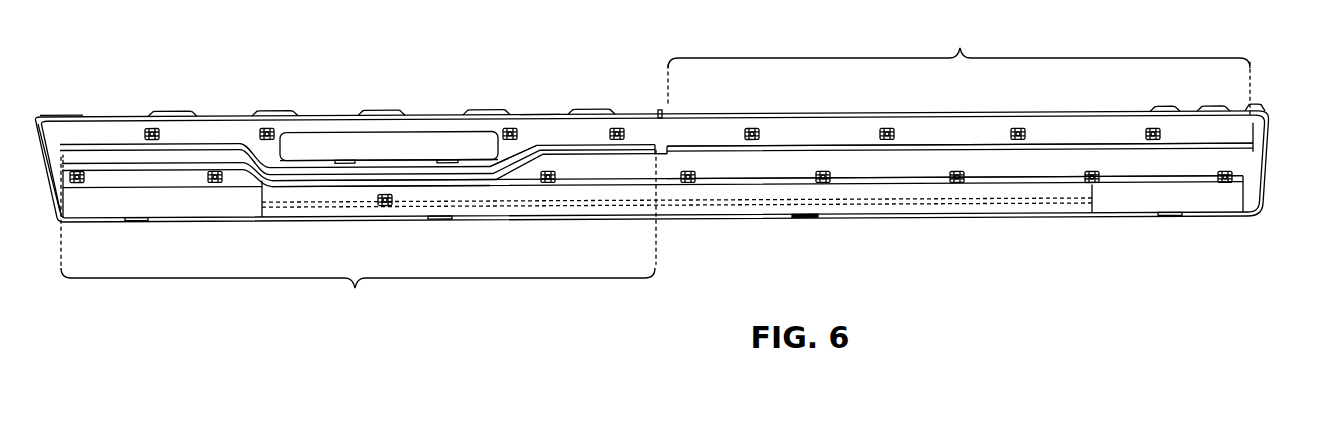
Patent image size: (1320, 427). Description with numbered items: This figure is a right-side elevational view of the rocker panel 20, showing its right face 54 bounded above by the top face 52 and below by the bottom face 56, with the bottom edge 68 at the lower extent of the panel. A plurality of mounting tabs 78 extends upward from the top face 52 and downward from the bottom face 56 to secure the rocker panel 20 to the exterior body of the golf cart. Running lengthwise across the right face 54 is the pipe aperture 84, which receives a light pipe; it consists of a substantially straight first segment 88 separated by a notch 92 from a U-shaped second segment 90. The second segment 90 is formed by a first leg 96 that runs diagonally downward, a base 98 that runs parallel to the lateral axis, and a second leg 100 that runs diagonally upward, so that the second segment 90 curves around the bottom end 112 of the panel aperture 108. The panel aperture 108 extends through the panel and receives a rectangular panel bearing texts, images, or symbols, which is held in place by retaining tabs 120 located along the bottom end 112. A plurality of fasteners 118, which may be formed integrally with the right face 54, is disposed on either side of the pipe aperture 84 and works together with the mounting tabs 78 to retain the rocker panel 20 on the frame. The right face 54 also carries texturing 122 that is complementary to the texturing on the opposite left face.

The rocker panel 20 is at (1142, 204).
The top face 52 is at (536, 117).
The right face 54 is at (873, 172).
The bottom face 56 is at (1095, 218).
The bottom edge 68 is at (413, 153).
The mounting tabs 78 is at (272, 114).
The pipe aperture 84 is at (794, 153).
The first segment 88 is at (959, 42).
The second segment 90 is at (358, 293).
The notch 92 is at (664, 162).
The first leg 96 is at (524, 168).
The base 98 is at (364, 180).
The second leg 100 is at (255, 178).
The panel aperture 108 is at (355, 147).
The bottom end 112 is at (300, 131).
The fasteners 118 is at (153, 128).
The retaining tabs 120 is at (447, 158).
The texturing 122 is at (116, 168).